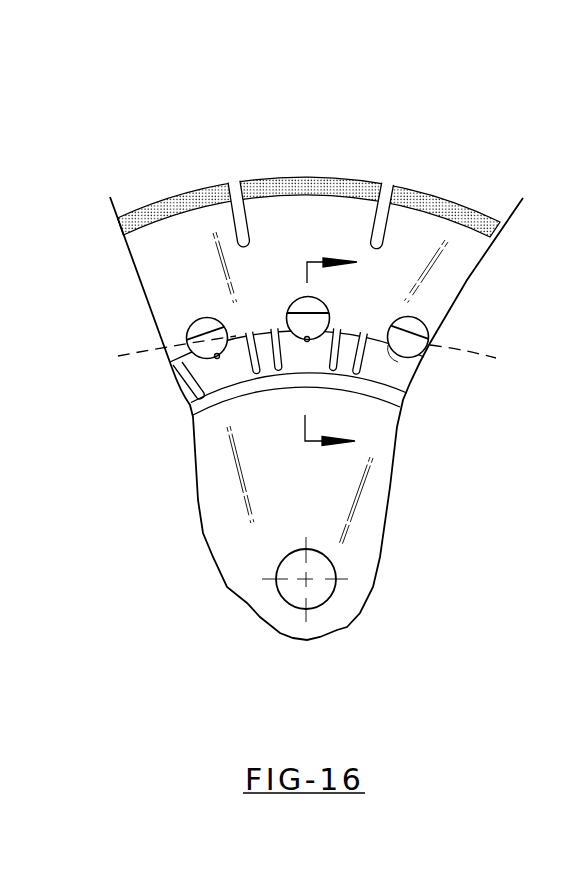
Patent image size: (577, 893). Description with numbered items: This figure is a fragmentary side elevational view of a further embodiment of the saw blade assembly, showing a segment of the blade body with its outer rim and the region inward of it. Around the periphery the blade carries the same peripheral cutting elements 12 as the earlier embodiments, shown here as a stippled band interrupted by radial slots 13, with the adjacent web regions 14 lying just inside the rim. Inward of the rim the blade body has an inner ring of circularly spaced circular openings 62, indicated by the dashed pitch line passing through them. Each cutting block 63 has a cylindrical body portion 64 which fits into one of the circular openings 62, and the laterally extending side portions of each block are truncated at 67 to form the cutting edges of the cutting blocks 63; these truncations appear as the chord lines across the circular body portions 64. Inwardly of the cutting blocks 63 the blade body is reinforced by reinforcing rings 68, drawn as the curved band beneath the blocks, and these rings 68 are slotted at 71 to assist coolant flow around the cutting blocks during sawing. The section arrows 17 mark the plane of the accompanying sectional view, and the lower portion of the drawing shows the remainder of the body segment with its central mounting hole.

The peripheral cutting elements 12 is at (285, 180).
The radial slot 13 is at (232, 184).
The web adjacent slot 14 is at (243, 222).
The section line arrow 17 is at (331, 354).
The circular openings 62 is at (305, 354).
The cutting block 63 is at (431, 328).
The cylindrical body portion 64 is at (328, 302).
The truncated side portions 67 is at (203, 337).
The reinforcing rings 68 is at (400, 382).
The slots 71 is at (288, 357).